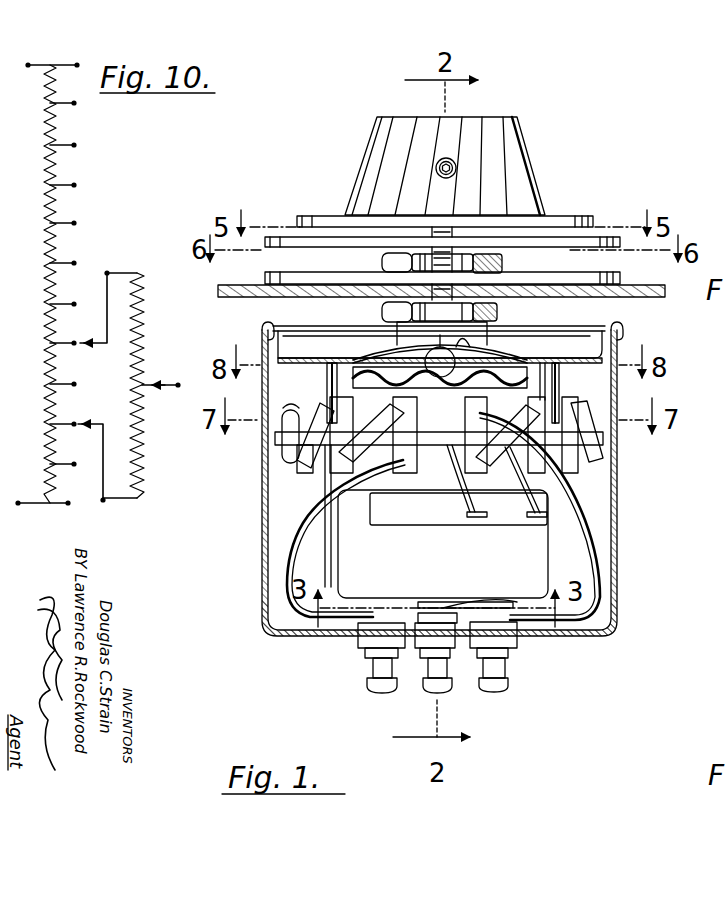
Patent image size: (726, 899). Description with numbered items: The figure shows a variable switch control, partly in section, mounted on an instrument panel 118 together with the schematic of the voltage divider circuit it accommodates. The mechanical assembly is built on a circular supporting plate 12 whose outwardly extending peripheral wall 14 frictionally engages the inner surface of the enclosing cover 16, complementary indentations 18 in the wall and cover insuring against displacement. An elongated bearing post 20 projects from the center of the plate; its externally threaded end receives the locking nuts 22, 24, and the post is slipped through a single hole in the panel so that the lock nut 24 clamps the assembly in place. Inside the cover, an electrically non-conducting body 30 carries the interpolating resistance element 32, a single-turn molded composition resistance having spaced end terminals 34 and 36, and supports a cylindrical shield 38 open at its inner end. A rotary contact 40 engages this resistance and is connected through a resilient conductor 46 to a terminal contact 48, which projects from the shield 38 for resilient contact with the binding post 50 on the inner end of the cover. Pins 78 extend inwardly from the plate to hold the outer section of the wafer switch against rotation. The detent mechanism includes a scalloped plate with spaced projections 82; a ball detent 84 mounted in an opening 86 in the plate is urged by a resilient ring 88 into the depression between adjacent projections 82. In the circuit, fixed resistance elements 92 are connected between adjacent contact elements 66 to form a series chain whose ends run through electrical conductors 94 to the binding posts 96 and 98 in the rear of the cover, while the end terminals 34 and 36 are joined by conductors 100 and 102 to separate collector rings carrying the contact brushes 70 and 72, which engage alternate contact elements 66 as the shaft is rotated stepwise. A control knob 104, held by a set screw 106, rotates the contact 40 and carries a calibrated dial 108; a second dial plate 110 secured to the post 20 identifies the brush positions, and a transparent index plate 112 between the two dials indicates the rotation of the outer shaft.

In FIG. 1, the supporting plate 12 is at (580, 360).
In FIG. 1, the peripheral wall 14 is at (282, 326).
In FIG. 1, the enclosing cover 16 is at (618, 502).
In FIG. 1, the indentations 18 is at (262, 335).
In FIG. 1, the bearing post 20 is at (396, 333).
In FIG. 1, the locking nut 22 is at (381, 312).
In FIG. 1, the locking nut 24 is at (380, 263).
In FIG. 1, the electrically non-conducting body 30 is at (425, 517).
In FIG. 10, the interpolating resistance element 32 is at (143, 460).
In FIG. 10, the end terminal 34 is at (103, 503).
In FIG. 1, the end terminal 34 is at (535, 520).
In FIG. 10, the end terminal 36 is at (108, 270).
In FIG. 1, the end terminal 36 is at (478, 520).
In FIG. 1, the cylindrical shield 38 is at (330, 562).
In FIG. 10, the rotary contact 40 is at (150, 383).
In FIG. 1, the resilient conductor 46 is at (476, 603).
In FIG. 1, the terminal contact 48 is at (440, 602).
In FIG. 10, the binding post 50 is at (178, 387).
In FIG. 1, the binding post 50 is at (438, 692).
In FIG. 10, the contact elements 66 is at (78, 148).
In FIG. 10, the contact brush 70 is at (80, 422).
In FIG. 10, the contact brush 72 is at (82, 345).
In FIG. 1, the pins 78 is at (326, 384).
In FIG. 1, the projections 82 is at (440, 386).
In FIG. 1, the ball detent 84 is at (436, 349).
In FIG. 1, the opening 86 is at (468, 335).
In FIG. 1, the resilient ring 88 is at (497, 349).
In FIG. 10, the fixed resistance elements 92 is at (50, 208).
In FIG. 1, the fixed resistance elements 92 is at (300, 443).
In FIG. 1, the electrical conductors 94 is at (302, 522).
In FIG. 10, the binding post 96 is at (20, 505).
In FIG. 1, the binding post 96 is at (382, 692).
In FIG. 10, the binding post 98 is at (30, 63).
In FIG. 1, the binding post 98 is at (496, 690).
In FIG. 1, the electrical conductor 100 is at (533, 510).
In FIG. 1, the electrical conductor 102 is at (466, 480).
In FIG. 1, the control knob 104 is at (520, 119).
In FIG. 1, the set screw 106 is at (436, 168).
In FIG. 1, the dial 108 is at (566, 215).
In FIG. 1, the second dial plate 110 is at (585, 273).
In FIG. 1, the index plate 112 is at (606, 236).
In FIG. 1, the instrument panel 118 is at (228, 294).